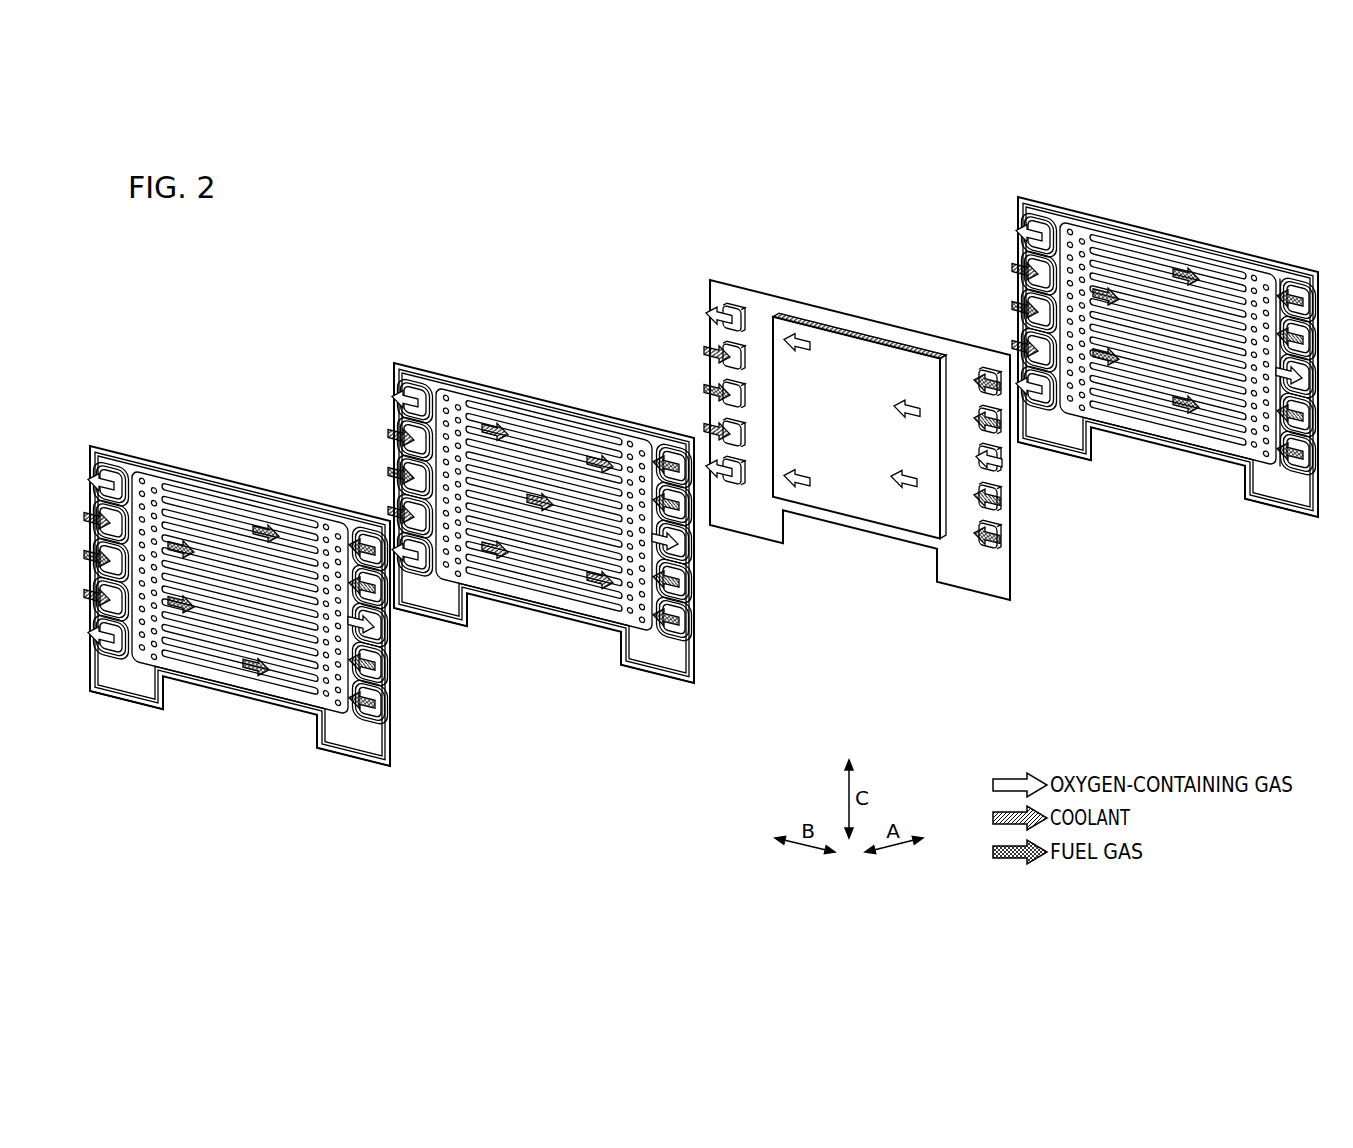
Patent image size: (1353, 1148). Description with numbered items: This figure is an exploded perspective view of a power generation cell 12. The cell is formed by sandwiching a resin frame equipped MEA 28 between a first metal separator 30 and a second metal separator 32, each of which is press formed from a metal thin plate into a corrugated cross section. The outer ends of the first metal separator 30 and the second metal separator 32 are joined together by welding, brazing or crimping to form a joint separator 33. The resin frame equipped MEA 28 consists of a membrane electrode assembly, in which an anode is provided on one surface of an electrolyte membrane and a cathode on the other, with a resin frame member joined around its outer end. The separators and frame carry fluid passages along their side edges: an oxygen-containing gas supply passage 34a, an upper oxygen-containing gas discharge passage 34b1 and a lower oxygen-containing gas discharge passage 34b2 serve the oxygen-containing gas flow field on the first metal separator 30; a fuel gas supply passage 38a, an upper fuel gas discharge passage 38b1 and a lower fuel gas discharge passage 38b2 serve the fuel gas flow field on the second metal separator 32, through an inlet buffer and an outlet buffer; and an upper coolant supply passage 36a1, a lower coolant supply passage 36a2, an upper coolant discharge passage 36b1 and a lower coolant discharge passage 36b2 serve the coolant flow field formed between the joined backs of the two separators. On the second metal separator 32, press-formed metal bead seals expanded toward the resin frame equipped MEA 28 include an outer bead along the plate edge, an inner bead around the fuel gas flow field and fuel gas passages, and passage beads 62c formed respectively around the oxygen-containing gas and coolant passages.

The power generation cell 12 is at (670, 266).
The resin frame equipped MEA 28 is at (860, 395).
The first metal separator 30 is at (650, 418).
The second metal separator 32 is at (553, 505).
The joint separator 33 is at (285, 334).
The oxygen-containing gas supply passage 34a is at (381, 633).
The upper oxygen-containing gas discharge passage 34b1 is at (106, 462).
The lower oxygen-containing gas discharge passage 34b2 is at (108, 652).
The upper coolant supply passage 36a1 is at (113, 488).
The lower coolant supply passage 36a2 is at (114, 652).
The upper coolant discharge passage 36b1 is at (380, 596).
The lower coolant discharge passage 36b2 is at (388, 680).
The fuel gas supply passage 38a is at (119, 565).
The upper fuel gas discharge passage 38b1 is at (370, 543).
The lower fuel gas discharge passage 38b2 is at (372, 710).
The passage beads 62c is at (1243, 338).